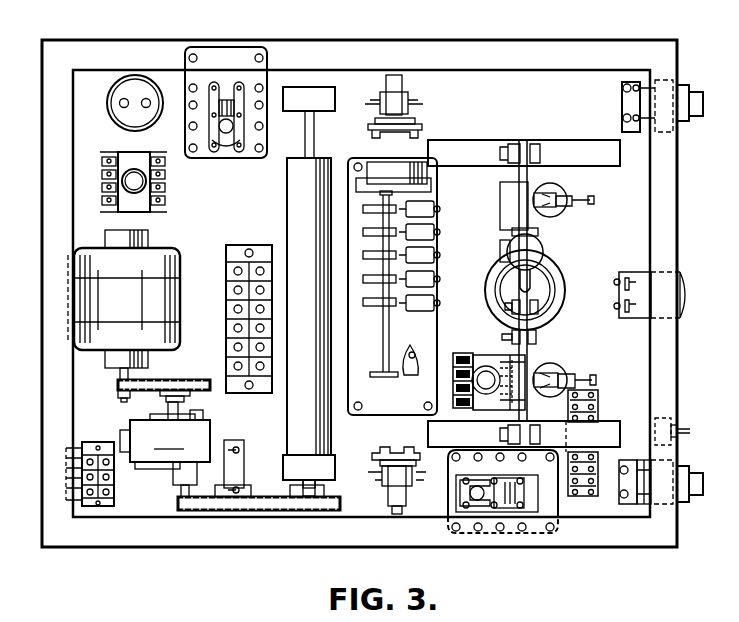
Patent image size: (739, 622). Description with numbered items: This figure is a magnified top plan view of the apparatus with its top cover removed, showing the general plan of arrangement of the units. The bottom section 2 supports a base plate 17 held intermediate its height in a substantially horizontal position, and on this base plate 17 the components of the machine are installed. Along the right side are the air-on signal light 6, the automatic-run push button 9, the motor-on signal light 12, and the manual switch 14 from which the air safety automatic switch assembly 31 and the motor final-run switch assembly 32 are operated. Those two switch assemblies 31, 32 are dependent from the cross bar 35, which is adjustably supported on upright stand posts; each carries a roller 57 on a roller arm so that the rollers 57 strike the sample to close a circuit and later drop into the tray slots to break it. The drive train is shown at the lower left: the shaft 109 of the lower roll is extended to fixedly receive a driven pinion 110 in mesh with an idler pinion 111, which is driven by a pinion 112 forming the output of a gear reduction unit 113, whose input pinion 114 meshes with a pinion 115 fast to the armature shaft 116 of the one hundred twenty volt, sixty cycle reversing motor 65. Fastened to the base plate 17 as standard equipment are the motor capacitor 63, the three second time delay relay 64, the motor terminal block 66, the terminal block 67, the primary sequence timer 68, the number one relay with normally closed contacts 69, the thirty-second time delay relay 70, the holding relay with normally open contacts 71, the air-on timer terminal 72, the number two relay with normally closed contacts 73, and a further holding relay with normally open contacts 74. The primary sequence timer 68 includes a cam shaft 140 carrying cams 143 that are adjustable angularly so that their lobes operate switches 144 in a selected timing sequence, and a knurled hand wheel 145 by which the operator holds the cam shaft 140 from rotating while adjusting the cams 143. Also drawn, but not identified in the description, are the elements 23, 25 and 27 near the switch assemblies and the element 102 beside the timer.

The bottom section 2 is at (42, 60).
The air-on signal light 6 is at (700, 104).
The automatic-run push button 9 is at (688, 296).
The motor-on signal light 12 is at (690, 502).
The manual switch for air safety automatic switch assembly and motor final-run switc 14 is at (690, 430).
The base plate 17 is at (490, 86).
The disc 23 is at (562, 270).
The pin 25 is at (536, 287).
The roller 27 is at (516, 246).
The air safety automatic switch assembly 31 is at (557, 190).
The motor final-run switch assembly 32 is at (552, 364).
The cross bar 35 is at (538, 233).
The rollers 57 is at (593, 377).
The motor capacitor 63 is at (107, 105).
The three second time delay relay 64 is at (102, 205).
The reversing motor 65 is at (87, 313).
The motor terminal block 66 is at (82, 500).
The terminal block 67 is at (238, 248).
The primary sequence timer 68 is at (362, 408).
The No. 1 relay, N-C contacts 69 is at (384, 498).
The thirty-second time delay relay 70 is at (480, 410).
The holding relay, N-O contacts 71 is at (470, 515).
The air-on timer terminal 72 is at (594, 496).
The No. 2 relay, N-C contacts 73 is at (394, 88).
The holding relay, N-O contacts 74 is at (214, 88).
The column 102 is at (287, 396).
The shaft of the lower roll 109 is at (302, 487).
The driven pinion 110 is at (308, 510).
The idler pinion 111 is at (240, 510).
The pinion 112 is at (178, 503).
The gear reduction unit 113 is at (165, 449).
The input pinion 114 is at (196, 370).
The pinion 115 is at (118, 391).
The armature shaft 116 is at (120, 374).
The cam shaft 140 is at (388, 340).
The cams 143 is at (372, 278).
The switches 144 is at (420, 306).
The hand wheel 145 is at (382, 377).